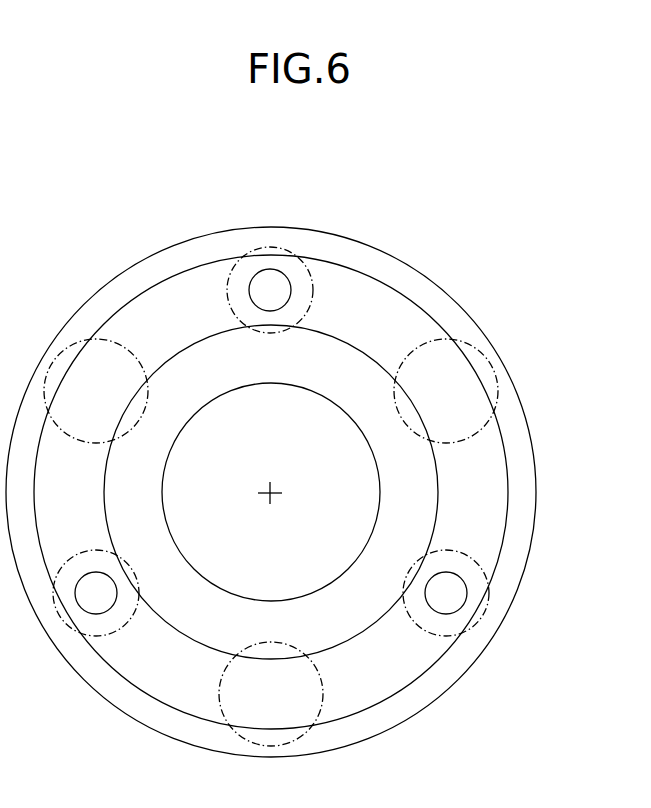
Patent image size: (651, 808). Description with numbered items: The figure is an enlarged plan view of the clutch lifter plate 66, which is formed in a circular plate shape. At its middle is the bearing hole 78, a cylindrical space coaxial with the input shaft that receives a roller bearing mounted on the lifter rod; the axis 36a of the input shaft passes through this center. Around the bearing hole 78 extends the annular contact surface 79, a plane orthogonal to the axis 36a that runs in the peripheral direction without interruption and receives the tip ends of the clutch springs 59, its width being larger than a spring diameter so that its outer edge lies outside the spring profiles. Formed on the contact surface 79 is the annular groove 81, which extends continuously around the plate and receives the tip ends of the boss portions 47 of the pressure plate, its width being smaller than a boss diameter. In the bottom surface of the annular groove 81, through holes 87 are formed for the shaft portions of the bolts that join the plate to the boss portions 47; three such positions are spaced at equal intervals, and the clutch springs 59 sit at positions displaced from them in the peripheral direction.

The clutch lifter plate 66 is at (465, 303).
The annular contact surface 79 is at (520, 488).
The annular groove 81 is at (416, 670).
The bearing hole 78 is at (372, 488).
The axis of the input shaft 36a is at (272, 490).
The boss portion 47 is at (278, 247).
The clutch spring 59 is at (118, 342).
The through hole 87 is at (290, 292).